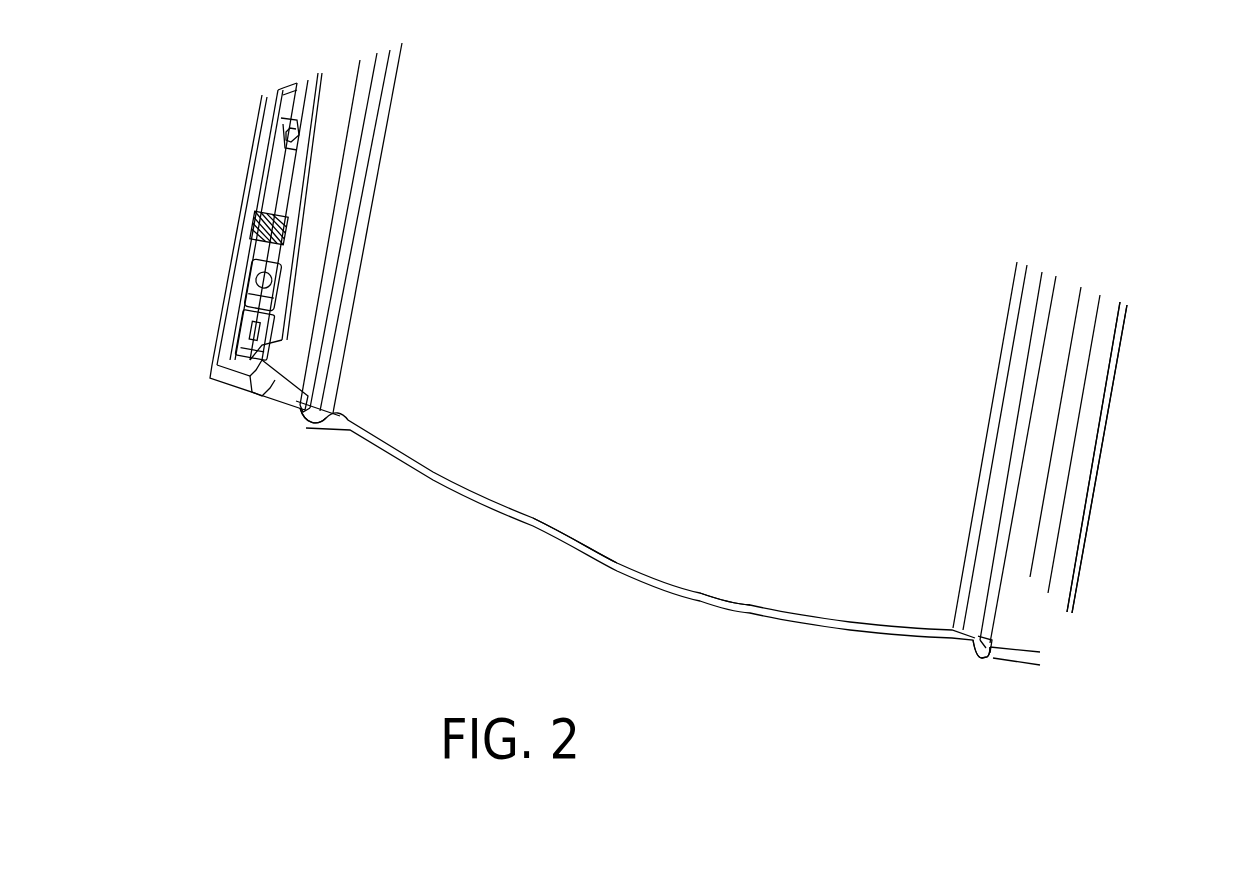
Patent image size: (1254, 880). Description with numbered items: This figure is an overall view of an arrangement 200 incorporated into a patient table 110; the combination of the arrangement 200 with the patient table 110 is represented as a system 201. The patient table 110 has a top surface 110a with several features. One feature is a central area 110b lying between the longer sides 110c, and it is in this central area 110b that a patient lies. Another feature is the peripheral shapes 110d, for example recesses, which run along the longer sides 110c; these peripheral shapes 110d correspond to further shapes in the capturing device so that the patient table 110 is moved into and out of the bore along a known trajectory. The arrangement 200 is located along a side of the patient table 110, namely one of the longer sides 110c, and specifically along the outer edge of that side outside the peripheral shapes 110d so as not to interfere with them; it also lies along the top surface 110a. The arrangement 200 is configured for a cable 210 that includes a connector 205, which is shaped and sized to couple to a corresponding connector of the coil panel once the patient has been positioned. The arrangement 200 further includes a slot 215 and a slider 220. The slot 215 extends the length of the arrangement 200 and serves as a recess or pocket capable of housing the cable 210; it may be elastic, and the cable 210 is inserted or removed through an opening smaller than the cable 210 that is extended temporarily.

The arrangement 200 is at (397, 243).
The system 201 is at (1141, 225).
The connector 205 is at (230, 337).
The cable 210 is at (243, 240).
The slot 215 is at (277, 103).
The slider 220 is at (277, 162).
The patient table 110 is at (462, 525).
The top surface 110a is at (617, 543).
The central area 110b is at (700, 570).
The longer sides 110c is at (235, 285).
The peripheral shapes 110d is at (270, 395).